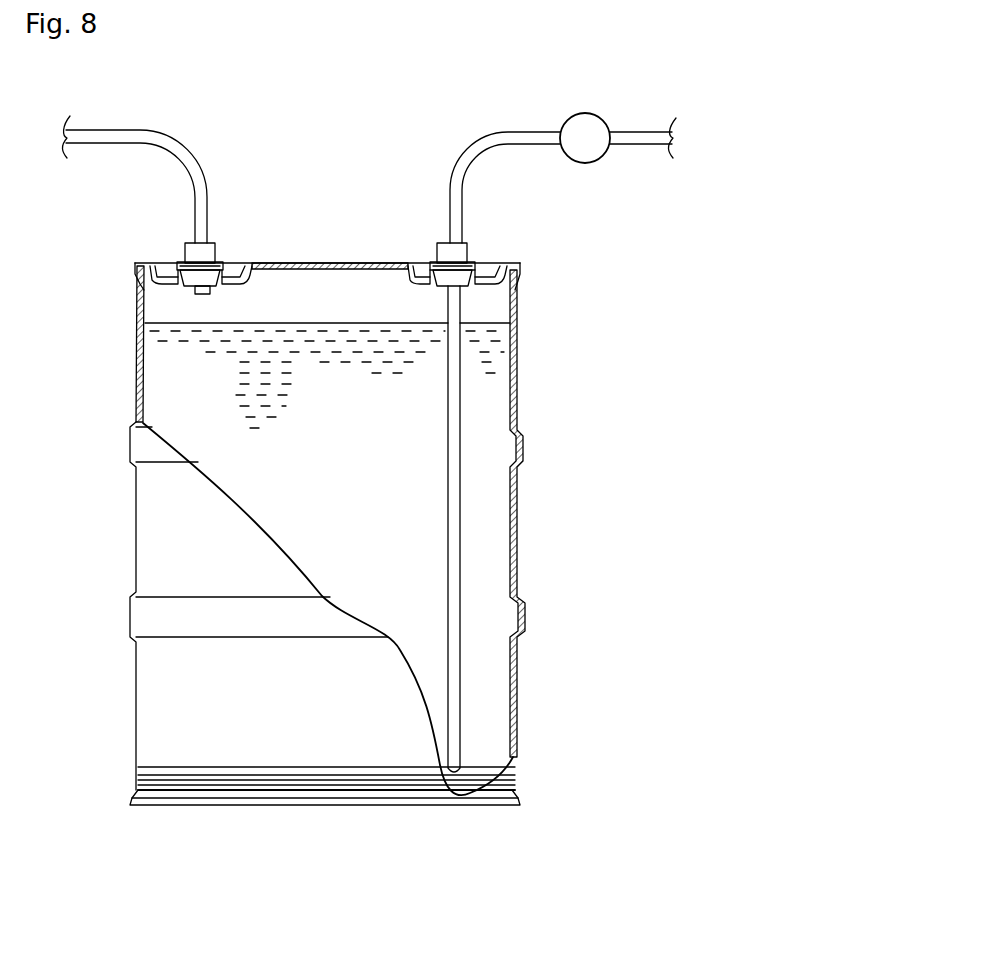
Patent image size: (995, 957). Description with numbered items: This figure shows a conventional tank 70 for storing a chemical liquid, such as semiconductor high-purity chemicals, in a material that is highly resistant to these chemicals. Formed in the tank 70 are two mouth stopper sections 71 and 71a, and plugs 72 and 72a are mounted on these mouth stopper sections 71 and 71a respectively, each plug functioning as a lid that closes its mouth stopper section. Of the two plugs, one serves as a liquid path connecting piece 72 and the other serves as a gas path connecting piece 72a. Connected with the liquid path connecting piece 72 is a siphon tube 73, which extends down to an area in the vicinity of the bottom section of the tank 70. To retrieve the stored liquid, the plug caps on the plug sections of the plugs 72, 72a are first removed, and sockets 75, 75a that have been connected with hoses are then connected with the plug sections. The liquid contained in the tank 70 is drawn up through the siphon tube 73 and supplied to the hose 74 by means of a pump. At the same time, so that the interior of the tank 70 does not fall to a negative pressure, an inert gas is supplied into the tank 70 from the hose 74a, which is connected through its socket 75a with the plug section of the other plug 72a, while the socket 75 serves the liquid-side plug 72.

The tank 70 is at (524, 502).
The mouth stopper section 71 is at (485, 290).
The mouth stopper section 71a is at (188, 287).
The plug 72 is at (470, 272).
The plug 72a is at (218, 273).
The siphon tube 73 is at (448, 435).
The hose 74 is at (528, 133).
The hose 74a is at (118, 131).
The socket 75 is at (442, 252).
The socket 75a is at (185, 252).